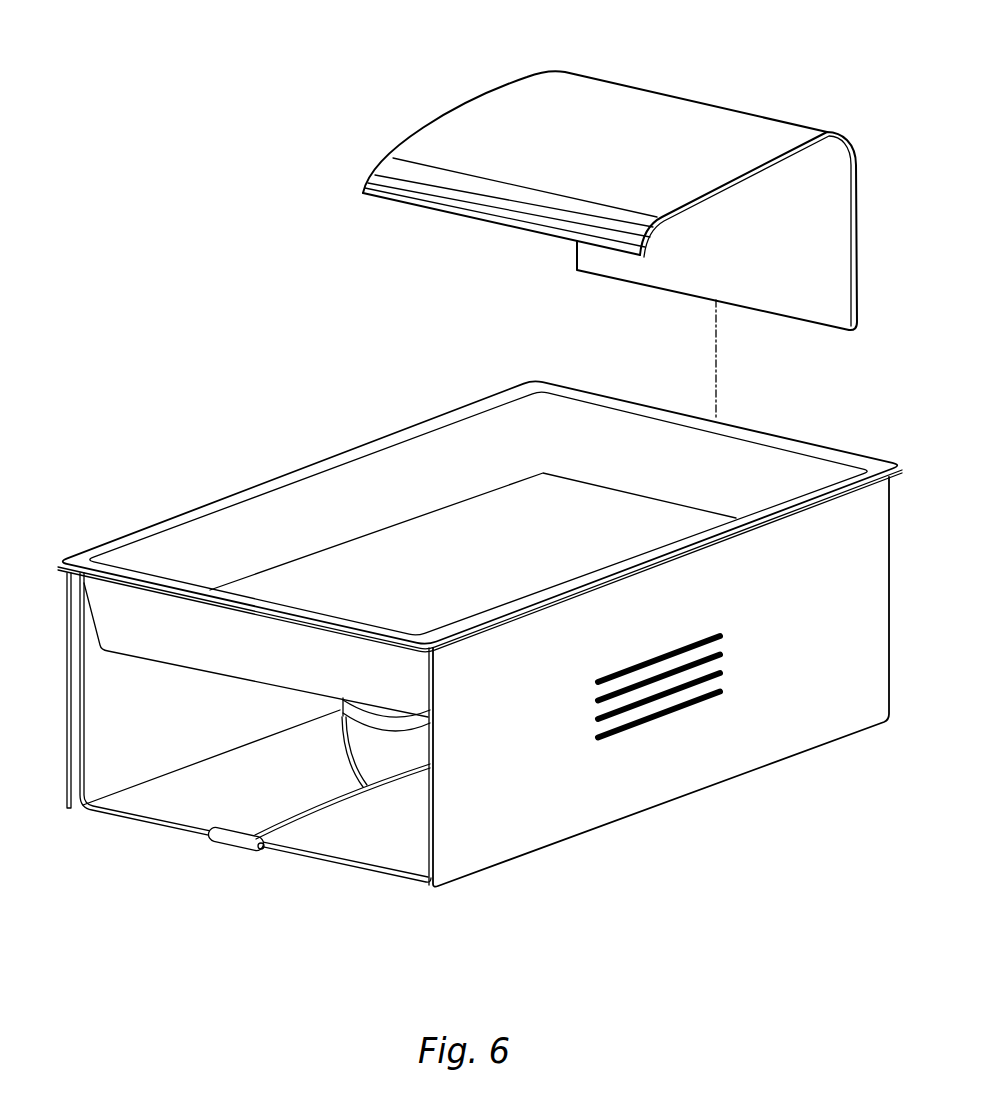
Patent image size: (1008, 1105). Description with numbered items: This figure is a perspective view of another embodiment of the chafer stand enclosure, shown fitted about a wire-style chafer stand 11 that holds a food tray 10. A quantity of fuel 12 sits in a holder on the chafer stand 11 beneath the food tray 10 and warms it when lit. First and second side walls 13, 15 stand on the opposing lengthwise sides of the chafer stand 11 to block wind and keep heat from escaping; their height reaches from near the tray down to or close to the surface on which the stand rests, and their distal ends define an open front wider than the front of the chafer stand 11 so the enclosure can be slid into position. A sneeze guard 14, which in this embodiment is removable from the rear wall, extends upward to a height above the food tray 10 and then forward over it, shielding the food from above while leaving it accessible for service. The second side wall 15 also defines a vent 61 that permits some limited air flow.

The food tray 10 is at (193, 637).
The chafer stand 11 is at (377, 873).
The fuel 12 is at (347, 760).
The first side wall 13 is at (112, 755).
The sneeze guard 14 is at (582, 108).
The second side wall 15 is at (545, 793).
The vent 61 is at (723, 675).